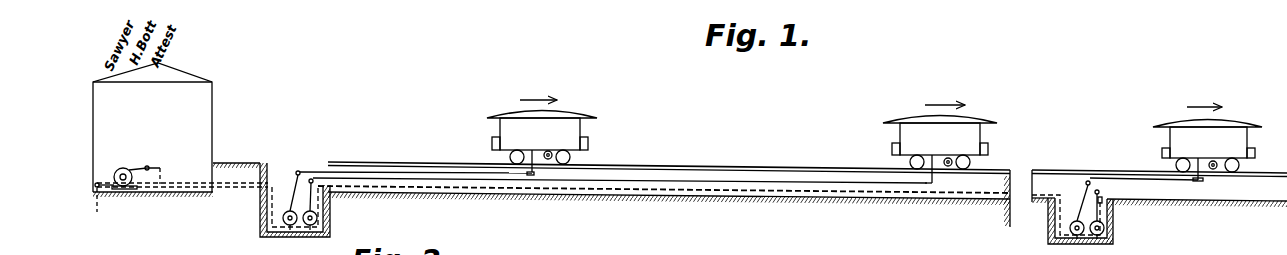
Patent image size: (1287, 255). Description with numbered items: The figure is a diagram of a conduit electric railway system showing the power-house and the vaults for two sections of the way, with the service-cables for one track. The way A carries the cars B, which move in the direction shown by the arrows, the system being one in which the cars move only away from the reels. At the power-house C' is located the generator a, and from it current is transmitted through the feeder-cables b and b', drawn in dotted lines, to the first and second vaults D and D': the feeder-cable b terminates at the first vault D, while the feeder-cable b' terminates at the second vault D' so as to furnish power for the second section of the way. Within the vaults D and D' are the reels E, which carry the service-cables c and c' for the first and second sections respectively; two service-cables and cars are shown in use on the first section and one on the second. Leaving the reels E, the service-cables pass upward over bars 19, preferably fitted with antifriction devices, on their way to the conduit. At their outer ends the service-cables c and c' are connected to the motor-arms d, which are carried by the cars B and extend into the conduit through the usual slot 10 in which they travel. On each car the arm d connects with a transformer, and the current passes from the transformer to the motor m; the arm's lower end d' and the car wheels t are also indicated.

The power-house C' is at (153, 130).
The generator a is at (125, 168).
The feeder-cable b is at (553, 206).
The feeder-cable b' is at (598, 202).
The first vault D is at (271, 200).
The second vault D' is at (1096, 221).
The reels E is at (791, 165).
The bars 19 is at (296, 174).
The service-cable c is at (608, 178).
The service-cable c' is at (1132, 199).
The way A is at (701, 166).
The slot 10 is at (866, 170).
The cars B is at (874, 129).
The car wheels t is at (874, 153).
The motor m is at (889, 151).
The motor-arm d is at (878, 172).
The grip rod foot d' is at (858, 199).